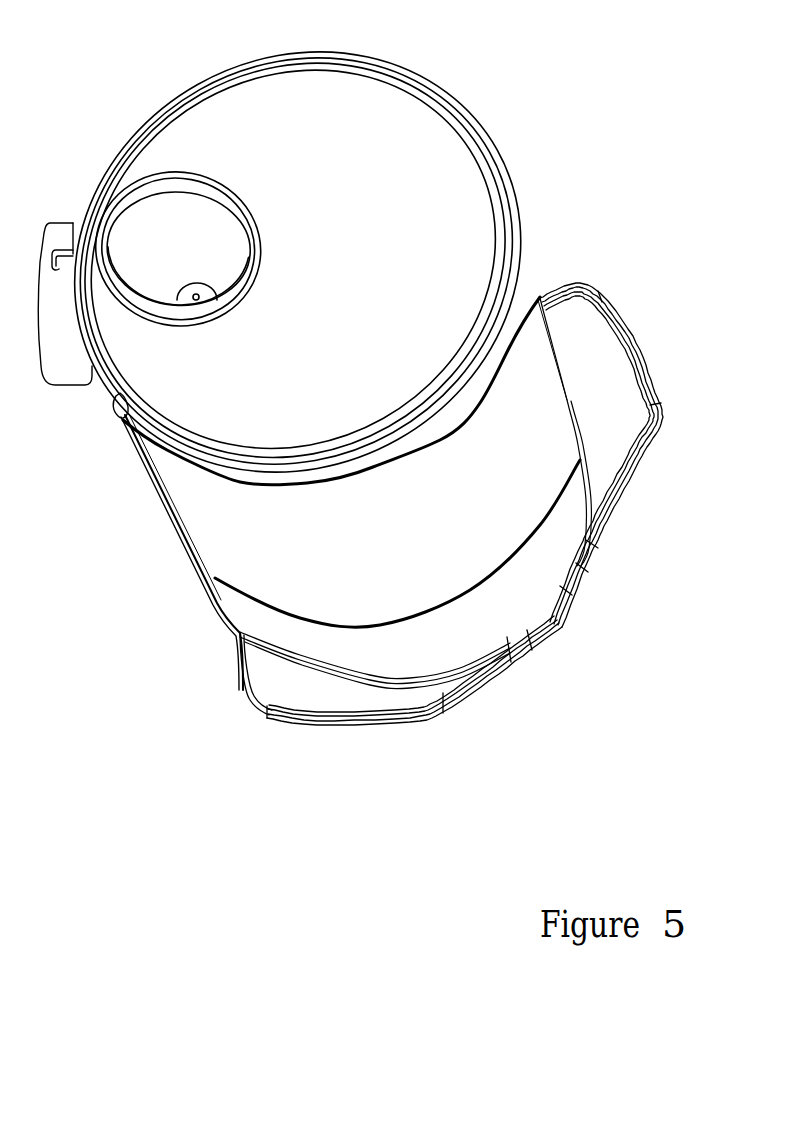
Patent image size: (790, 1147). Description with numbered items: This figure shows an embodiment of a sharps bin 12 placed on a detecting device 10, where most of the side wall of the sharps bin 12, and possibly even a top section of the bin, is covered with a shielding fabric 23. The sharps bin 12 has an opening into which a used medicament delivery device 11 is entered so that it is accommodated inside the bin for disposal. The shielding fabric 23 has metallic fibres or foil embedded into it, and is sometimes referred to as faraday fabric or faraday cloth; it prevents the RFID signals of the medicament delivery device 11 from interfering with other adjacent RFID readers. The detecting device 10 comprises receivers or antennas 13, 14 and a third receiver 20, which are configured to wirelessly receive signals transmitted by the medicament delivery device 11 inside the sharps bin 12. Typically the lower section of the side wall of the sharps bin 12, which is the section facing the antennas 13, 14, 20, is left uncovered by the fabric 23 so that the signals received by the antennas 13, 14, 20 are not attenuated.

The detecting device 10 is at (561, 624).
The medicament delivery device 11 is at (193, 283).
The sharps bin 12 is at (440, 127).
The receiver 13 is at (122, 427).
The receiver 14 is at (620, 355).
The third receiver 20 is at (258, 665).
The shielding fabric 23 is at (206, 531).